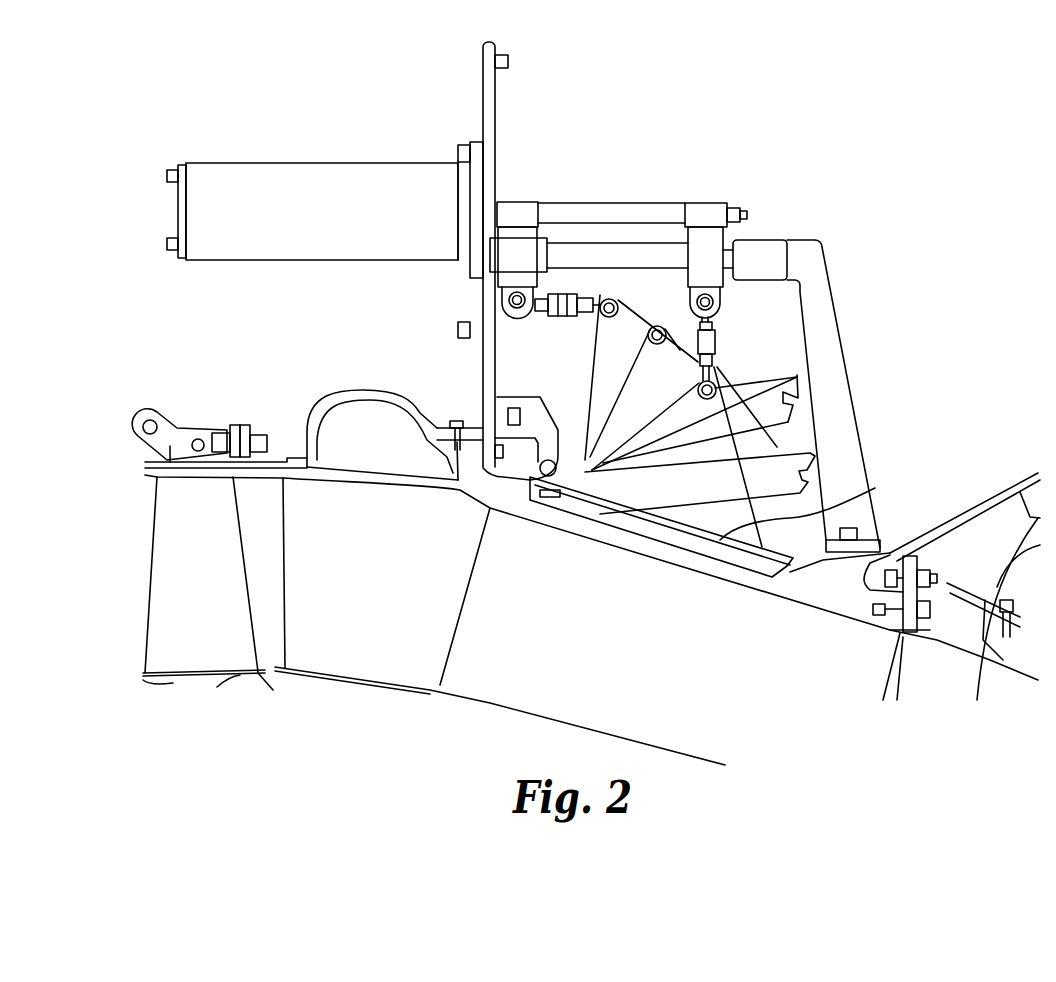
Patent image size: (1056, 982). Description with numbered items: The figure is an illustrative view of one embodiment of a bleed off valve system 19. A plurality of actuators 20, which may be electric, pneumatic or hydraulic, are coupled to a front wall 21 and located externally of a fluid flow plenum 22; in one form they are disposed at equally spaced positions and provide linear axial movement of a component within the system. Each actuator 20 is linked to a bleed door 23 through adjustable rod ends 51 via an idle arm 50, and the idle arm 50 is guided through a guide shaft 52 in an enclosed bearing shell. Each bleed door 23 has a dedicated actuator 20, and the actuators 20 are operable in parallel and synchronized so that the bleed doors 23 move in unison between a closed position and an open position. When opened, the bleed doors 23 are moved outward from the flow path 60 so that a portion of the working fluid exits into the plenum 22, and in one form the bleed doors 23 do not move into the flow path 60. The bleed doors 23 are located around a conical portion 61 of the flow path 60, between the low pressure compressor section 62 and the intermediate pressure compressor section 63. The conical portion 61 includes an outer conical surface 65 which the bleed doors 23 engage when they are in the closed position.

The system 19 is at (880, 140).
The actuator 20 is at (270, 165).
The front wall 21 is at (483, 82).
The fluid flow plenum 22 is at (641, 146).
The bleed door 23 is at (735, 573).
The idle arm 50 is at (710, 256).
The adjustable rod end 51 is at (717, 325).
The guide shaft 52 is at (650, 240).
The flow path 60 is at (564, 634).
The conical portion 61 is at (470, 690).
The low pressure compressor section 62 is at (298, 690).
The intermediate pressure compressor section 63 is at (1000, 746).
The outer conical surface 65 is at (853, 500).